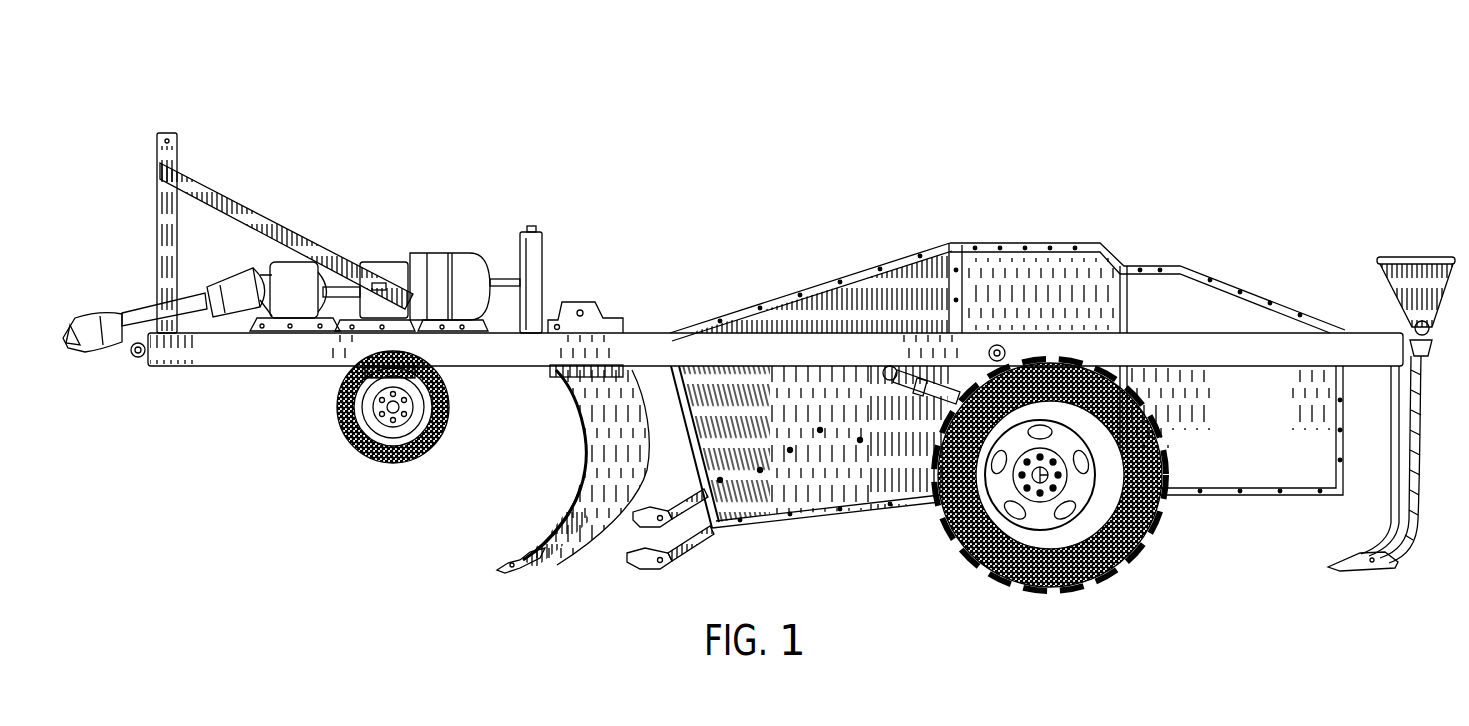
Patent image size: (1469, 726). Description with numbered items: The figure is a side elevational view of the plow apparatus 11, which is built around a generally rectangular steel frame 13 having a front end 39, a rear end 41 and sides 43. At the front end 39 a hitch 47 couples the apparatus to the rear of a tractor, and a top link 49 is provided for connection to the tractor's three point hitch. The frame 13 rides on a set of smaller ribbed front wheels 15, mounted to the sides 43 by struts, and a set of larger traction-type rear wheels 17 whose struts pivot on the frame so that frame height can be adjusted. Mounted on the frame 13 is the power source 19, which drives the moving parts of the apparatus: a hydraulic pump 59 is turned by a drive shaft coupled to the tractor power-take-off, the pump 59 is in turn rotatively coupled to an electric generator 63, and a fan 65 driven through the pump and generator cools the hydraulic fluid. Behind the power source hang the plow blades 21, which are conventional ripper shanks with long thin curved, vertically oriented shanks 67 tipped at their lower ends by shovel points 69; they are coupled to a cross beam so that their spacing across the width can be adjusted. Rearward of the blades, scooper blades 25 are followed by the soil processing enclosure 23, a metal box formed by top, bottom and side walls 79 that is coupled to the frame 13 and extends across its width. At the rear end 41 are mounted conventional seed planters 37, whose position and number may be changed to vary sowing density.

The plow apparatus 11 is at (693, 222).
The frame 13 is at (641, 333).
The front wheels 15 is at (348, 433).
The rear wheels 17 is at (1000, 578).
The power source 19 is at (250, 258).
The plow blades 21 is at (580, 477).
The soil processing enclosure 23 is at (1028, 267).
The scooper blades 25 is at (632, 563).
The seed planters 37 is at (1390, 258).
The front end 39 is at (140, 368).
The rear end 41 is at (1428, 353).
The sides 43 is at (502, 353).
The hitch 47 is at (130, 345).
The top link 49 is at (180, 137).
The hydraulic pump 59 is at (292, 275).
The electric generator 63 is at (392, 258).
The fan 65 is at (541, 230).
The shanks 67 is at (548, 527).
The shovel points 69 is at (500, 571).
The side walls 79 is at (887, 268).